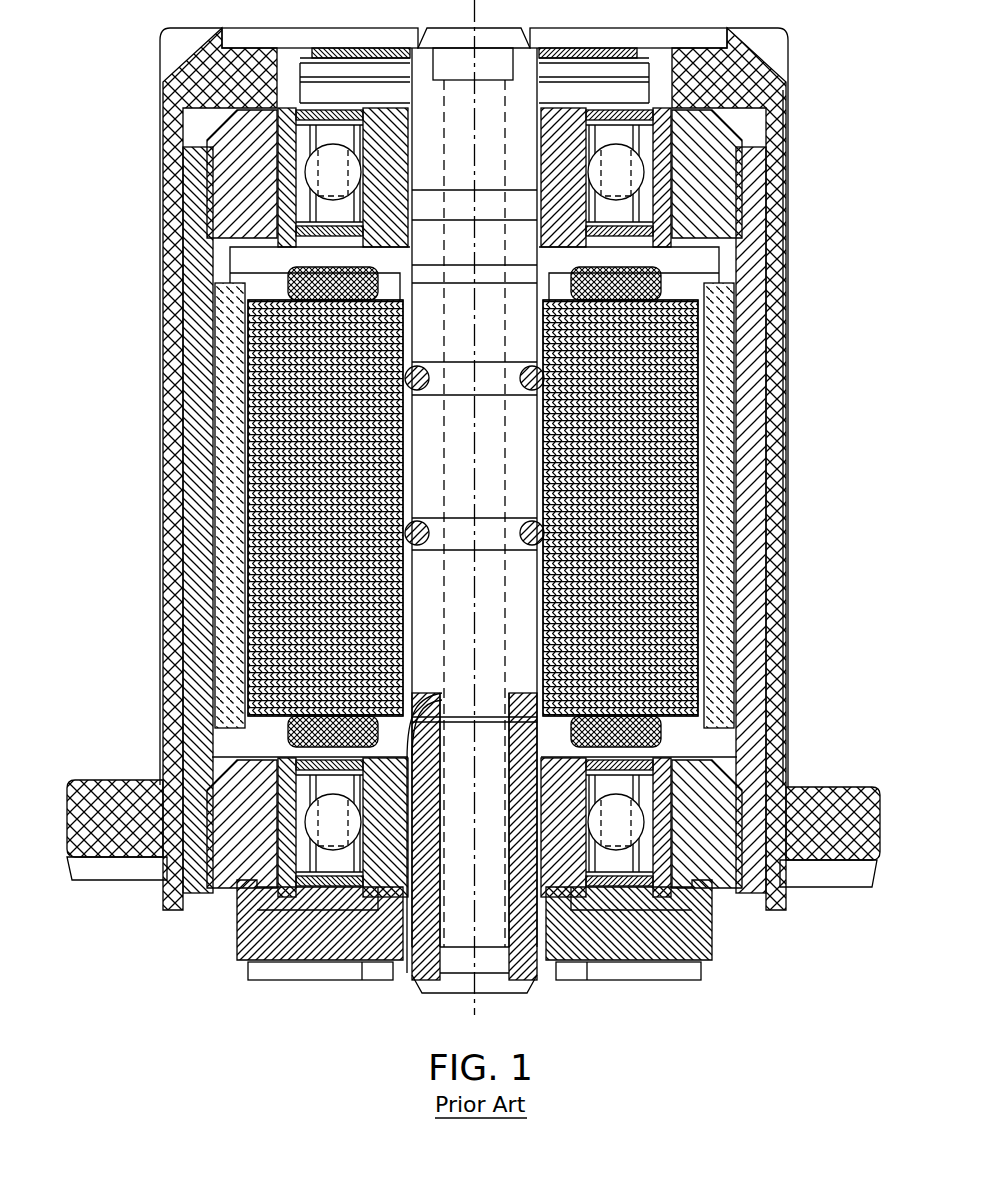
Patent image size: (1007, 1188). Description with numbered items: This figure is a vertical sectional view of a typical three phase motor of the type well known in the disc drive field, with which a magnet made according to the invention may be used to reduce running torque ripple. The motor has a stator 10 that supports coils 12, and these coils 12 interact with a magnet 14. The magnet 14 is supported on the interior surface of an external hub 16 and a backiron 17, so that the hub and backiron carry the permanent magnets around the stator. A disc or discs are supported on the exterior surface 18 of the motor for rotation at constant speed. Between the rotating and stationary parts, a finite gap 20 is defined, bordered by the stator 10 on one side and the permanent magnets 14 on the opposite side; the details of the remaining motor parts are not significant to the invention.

The stator 10 is at (655, 518).
The coils 12 is at (655, 270).
The magnet 14 is at (717, 395).
The external hub 16 is at (777, 440).
The backiron 17 is at (745, 533).
The exterior surface 18 is at (786, 312).
The finite gap 20 is at (655, 577).